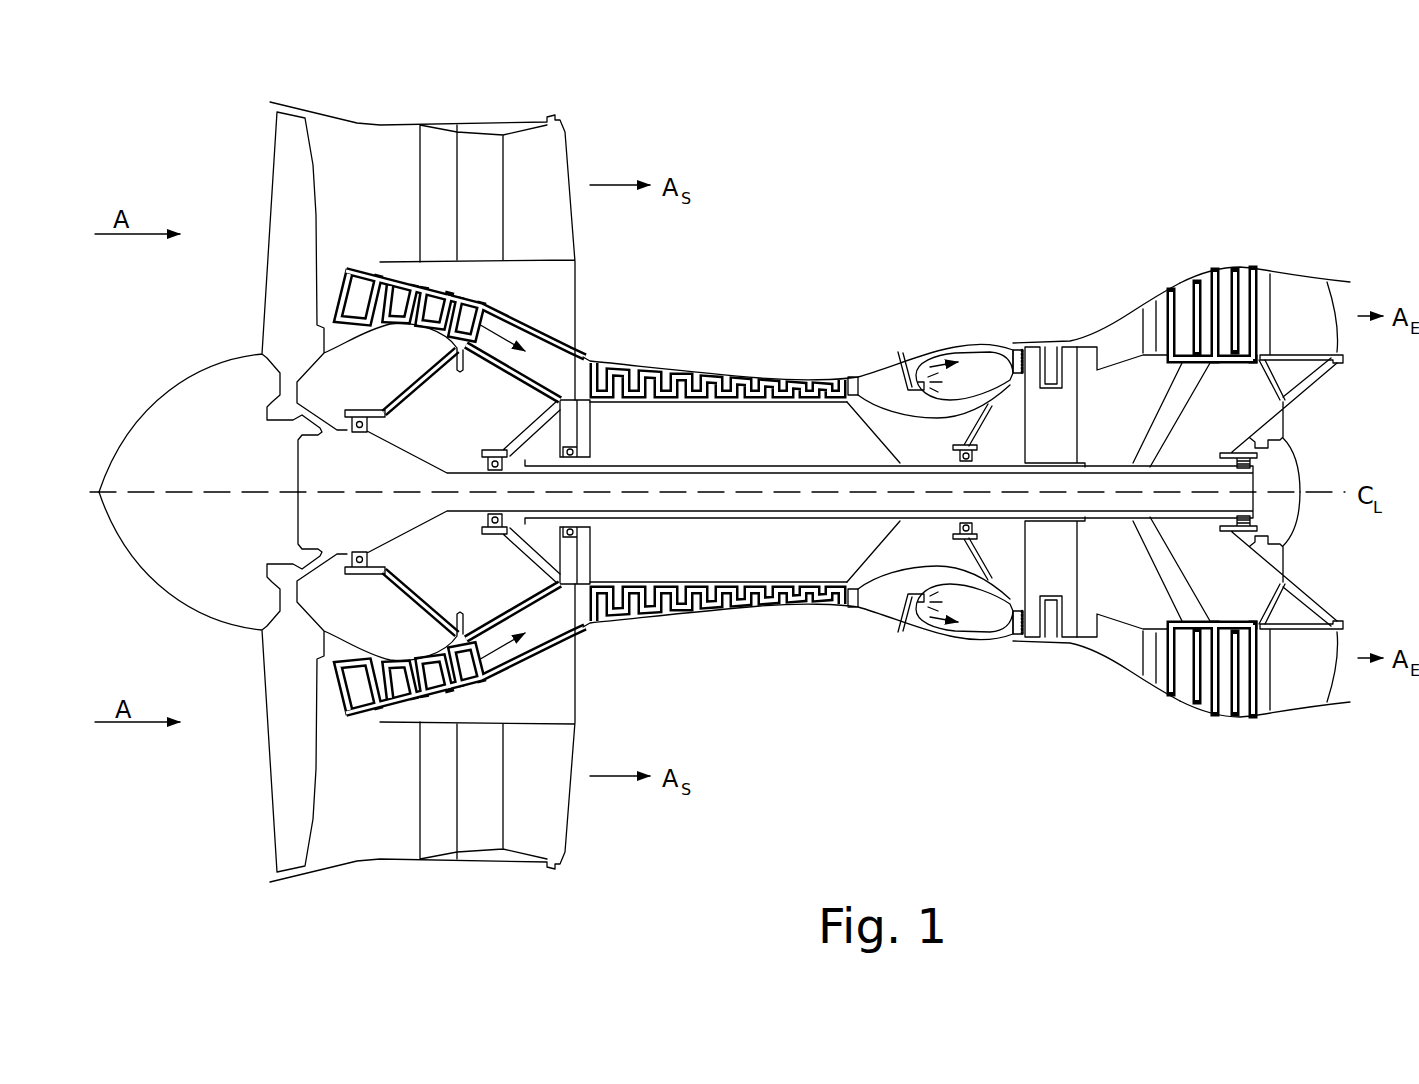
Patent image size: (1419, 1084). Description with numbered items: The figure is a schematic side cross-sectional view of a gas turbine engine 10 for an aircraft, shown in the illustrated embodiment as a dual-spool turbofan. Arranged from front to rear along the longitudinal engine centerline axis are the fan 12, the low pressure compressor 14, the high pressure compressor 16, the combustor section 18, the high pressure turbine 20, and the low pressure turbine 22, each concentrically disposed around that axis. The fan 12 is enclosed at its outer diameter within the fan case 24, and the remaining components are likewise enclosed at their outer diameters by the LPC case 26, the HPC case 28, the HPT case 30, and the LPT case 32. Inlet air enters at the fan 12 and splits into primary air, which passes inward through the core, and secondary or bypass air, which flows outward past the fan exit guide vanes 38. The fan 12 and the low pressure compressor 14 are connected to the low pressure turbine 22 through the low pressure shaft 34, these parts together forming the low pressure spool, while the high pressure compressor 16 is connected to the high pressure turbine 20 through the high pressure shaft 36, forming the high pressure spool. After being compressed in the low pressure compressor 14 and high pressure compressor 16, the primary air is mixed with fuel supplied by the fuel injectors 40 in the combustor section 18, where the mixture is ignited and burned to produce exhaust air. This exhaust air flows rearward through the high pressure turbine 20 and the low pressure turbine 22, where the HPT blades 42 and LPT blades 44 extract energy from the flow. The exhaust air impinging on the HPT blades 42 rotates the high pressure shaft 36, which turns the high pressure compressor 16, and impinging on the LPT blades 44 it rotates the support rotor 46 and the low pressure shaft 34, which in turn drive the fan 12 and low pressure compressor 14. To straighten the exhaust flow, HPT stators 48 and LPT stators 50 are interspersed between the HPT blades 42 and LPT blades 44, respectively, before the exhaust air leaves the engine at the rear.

The gas turbine engine 10 is at (1112, 180).
The fan 12 is at (270, 783).
The low pressure compressor 14 is at (405, 712).
The high pressure compressor 16 is at (767, 633).
The combustor section 18 is at (960, 340).
The high pressure turbine 20 is at (1040, 660).
The low pressure turbine 22 is at (1172, 718).
The fan case 24 is at (390, 122).
The LPC case 26 is at (393, 282).
The HPC case 28 is at (738, 380).
The HPT case 30 is at (1087, 338).
The LPT case 32 is at (1247, 268).
The low pressure shaft 34 is at (818, 480).
The high pressure shaft 36 is at (922, 522).
The fan exit guide vanes 38 is at (493, 223).
The fuel injectors 40 is at (903, 360).
The HPT blades 42 is at (1067, 633).
The LPT blades 44 is at (1172, 318).
The support rotor 46 is at (1178, 417).
The HPT stators 48 is at (1020, 345).
The LPT stators 50 is at (1197, 284).